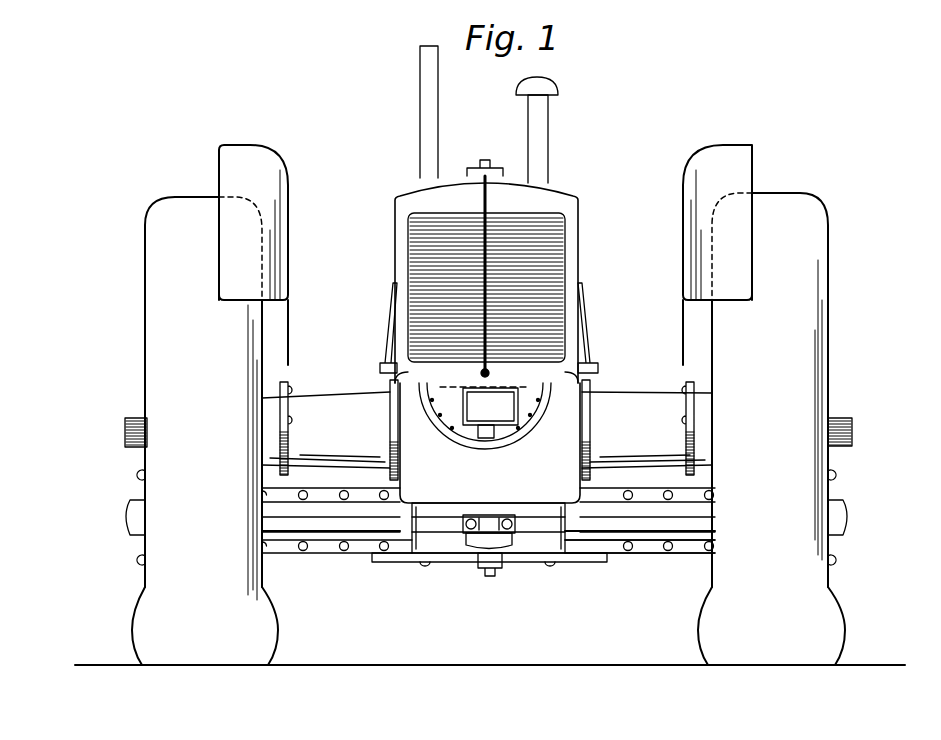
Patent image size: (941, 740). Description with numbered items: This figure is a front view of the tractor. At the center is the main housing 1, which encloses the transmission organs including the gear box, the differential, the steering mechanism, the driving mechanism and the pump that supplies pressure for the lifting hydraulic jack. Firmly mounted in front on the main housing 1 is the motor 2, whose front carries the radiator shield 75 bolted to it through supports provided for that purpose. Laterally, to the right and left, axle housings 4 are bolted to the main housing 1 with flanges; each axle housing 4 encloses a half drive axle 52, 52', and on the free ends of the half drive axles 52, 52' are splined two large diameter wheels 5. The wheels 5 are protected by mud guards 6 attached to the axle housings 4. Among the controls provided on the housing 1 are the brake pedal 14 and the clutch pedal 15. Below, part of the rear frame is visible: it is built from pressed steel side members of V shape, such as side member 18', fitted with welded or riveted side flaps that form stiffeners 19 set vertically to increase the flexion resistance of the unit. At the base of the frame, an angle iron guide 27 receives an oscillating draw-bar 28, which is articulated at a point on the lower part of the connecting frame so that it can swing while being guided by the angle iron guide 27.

The main housing 1 is at (568, 437).
The motor 2 is at (548, 380).
The axle housing 4 is at (320, 393).
The wheel 5 is at (176, 213).
The mud guard 6 is at (262, 158).
The brake pedal 14 is at (385, 307).
The clutch pedal 15 is at (590, 300).
The side member 18' is at (640, 574).
The stiffener 19 is at (327, 553).
The angle iron guide 27 is at (590, 561).
The oscillating draw-bar 28 is at (483, 569).
The half drive axle 52 is at (870, 396).
The half drive axle 52' is at (105, 404).
The radiator shield 75 is at (565, 218).